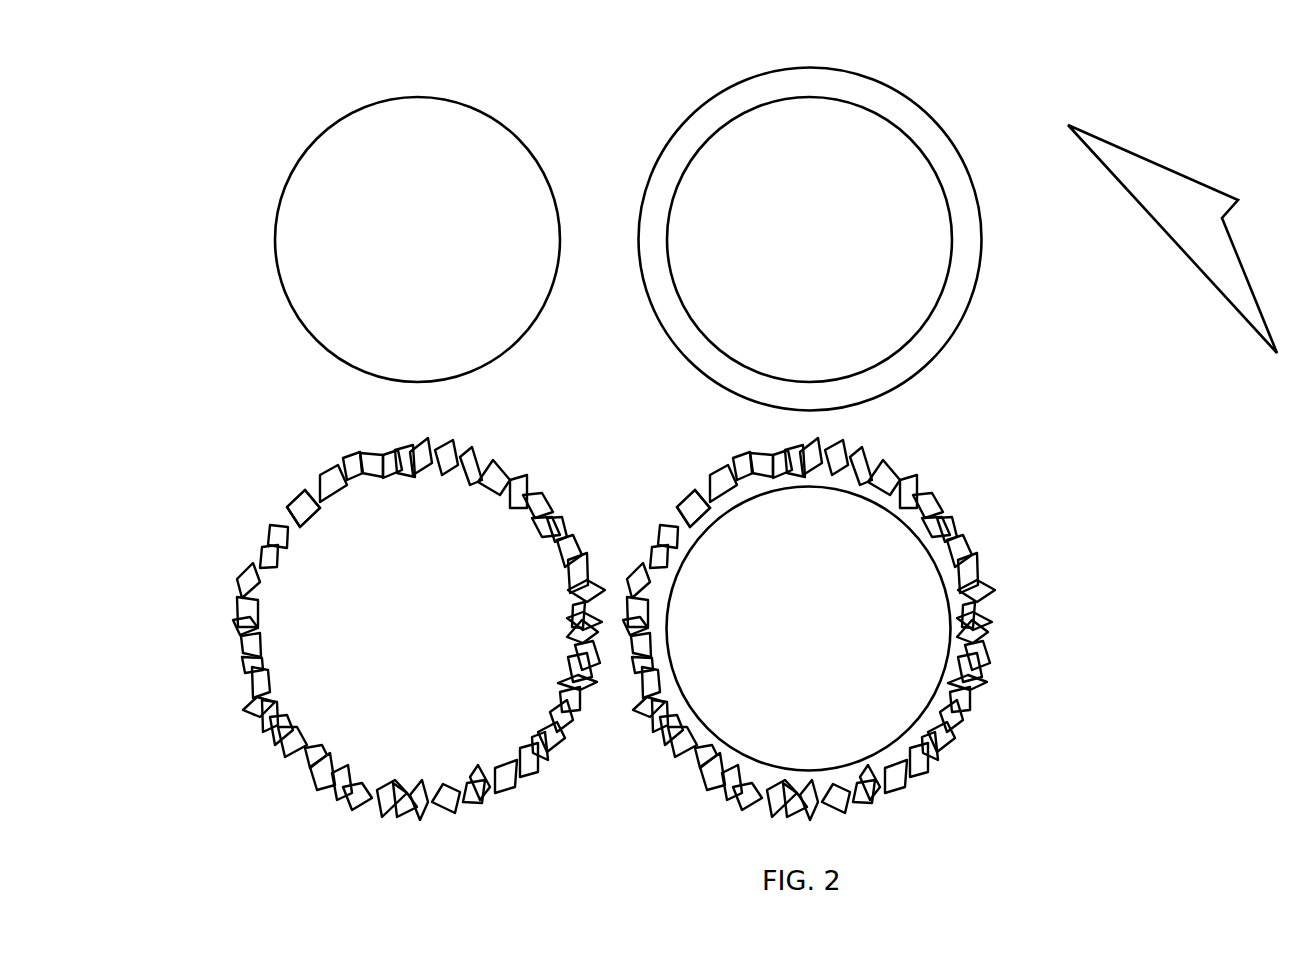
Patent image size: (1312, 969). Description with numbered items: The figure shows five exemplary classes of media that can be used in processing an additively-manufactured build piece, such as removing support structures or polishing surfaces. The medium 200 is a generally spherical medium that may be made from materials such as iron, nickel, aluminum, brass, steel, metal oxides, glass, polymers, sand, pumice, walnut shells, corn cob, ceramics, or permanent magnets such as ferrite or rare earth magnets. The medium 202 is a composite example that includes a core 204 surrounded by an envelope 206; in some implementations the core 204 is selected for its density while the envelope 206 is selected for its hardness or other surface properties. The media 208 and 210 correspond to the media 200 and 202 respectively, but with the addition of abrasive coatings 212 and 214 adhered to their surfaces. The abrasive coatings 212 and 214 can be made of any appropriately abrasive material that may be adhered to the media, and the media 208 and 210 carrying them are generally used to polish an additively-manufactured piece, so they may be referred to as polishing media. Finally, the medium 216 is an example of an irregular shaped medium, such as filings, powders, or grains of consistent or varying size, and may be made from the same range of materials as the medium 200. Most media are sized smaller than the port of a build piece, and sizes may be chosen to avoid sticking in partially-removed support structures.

The medium 200 is at (417, 97).
The medium 202 is at (810, 68).
The core 204 is at (710, 183).
The envelope 206 is at (682, 139).
The medium 208 is at (478, 453).
The medium 210 is at (868, 453).
The abrasive coating 212 is at (278, 532).
The abrasive coating 214 is at (668, 532).
The medium 216 is at (1195, 181).